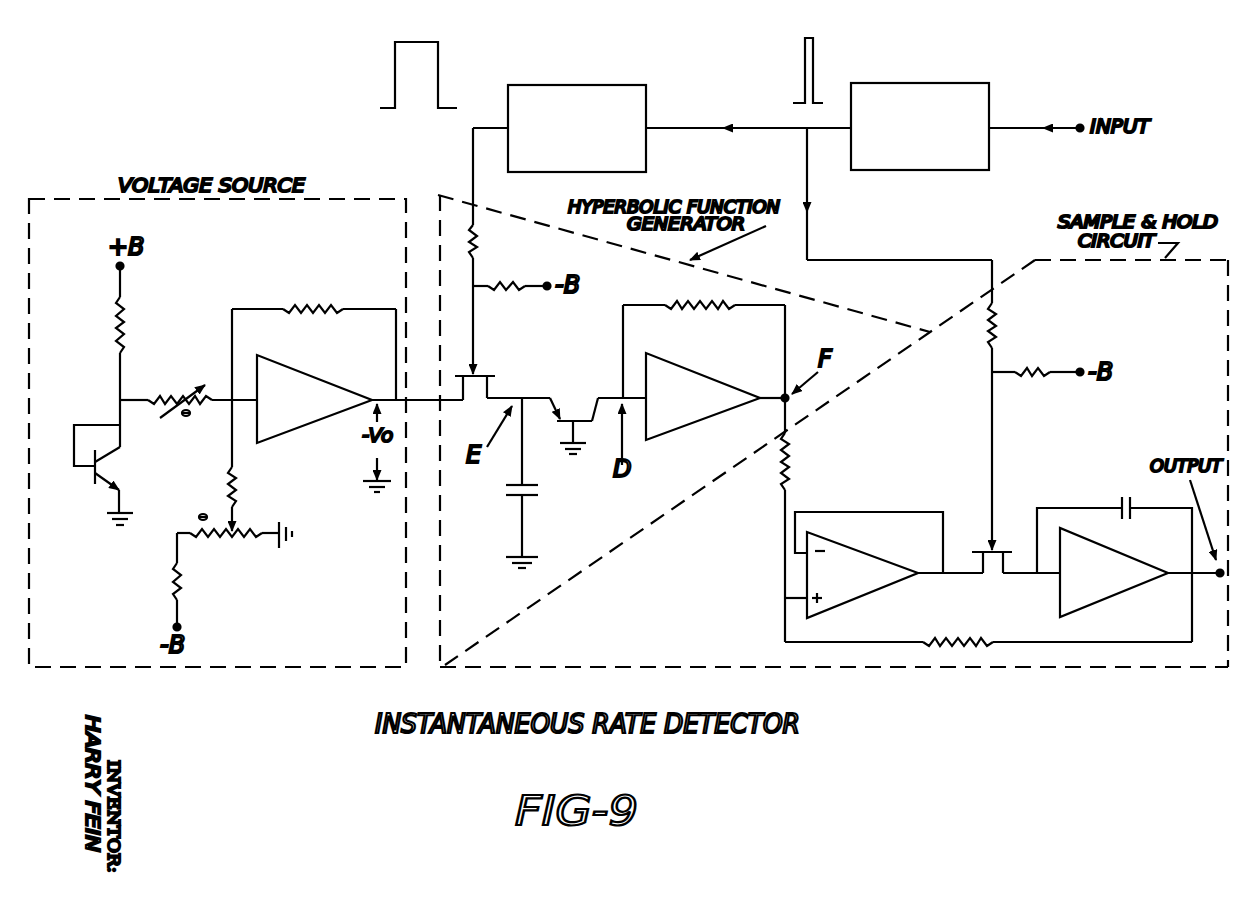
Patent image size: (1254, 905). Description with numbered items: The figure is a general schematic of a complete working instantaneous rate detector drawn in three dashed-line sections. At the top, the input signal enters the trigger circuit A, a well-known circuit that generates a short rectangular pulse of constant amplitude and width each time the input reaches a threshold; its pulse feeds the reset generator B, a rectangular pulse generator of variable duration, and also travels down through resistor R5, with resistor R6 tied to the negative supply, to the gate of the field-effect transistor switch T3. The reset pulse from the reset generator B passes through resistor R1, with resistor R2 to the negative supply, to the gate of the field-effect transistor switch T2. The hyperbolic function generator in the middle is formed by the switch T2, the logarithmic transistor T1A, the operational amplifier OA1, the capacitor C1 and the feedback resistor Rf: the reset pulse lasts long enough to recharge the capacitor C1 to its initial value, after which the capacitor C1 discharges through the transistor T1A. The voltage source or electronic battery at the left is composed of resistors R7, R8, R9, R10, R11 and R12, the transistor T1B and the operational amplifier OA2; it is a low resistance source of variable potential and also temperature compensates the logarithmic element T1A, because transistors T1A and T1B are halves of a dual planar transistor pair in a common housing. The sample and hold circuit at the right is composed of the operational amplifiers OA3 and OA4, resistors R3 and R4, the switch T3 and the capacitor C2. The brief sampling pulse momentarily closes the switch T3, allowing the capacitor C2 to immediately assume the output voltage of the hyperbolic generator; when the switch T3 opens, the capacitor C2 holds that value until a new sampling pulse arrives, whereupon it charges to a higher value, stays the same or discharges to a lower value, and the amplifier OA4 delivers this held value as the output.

The trigger circuit A is at (920, 126).
The reset generator B is at (577, 128).
The resistor R1 is at (493, 242).
The resistor R2 is at (512, 299).
The resistor R3 is at (805, 520).
The resistor R4 is at (988, 660).
The resistor R5 is at (1012, 304).
The resistor R6 is at (1038, 385).
The resistor R7 is at (139, 325).
The variable resistor R8 is at (180, 394).
The feedback resistor R9 is at (314, 338).
The resistor R10 is at (260, 499).
The resistor R11 is at (154, 582).
The potentiometer R12 is at (234, 541).
The feedback resistor Rf is at (704, 336).
The capacitor C1 is at (510, 483).
The capacitor C2 is at (1114, 555).
The logarithmic transistor T1A is at (574, 412).
The transistor T1B is at (88, 475).
The field-effect transistor switch T2 is at (486, 370).
The field-effect transistor switch T3 is at (987, 549).
The operational amplifier OA1 is at (703, 396).
The operational amplifier OA2 is at (314, 399).
The operational amplifier OA3 is at (864, 565).
The operational amplifier OA4 is at (1114, 572).